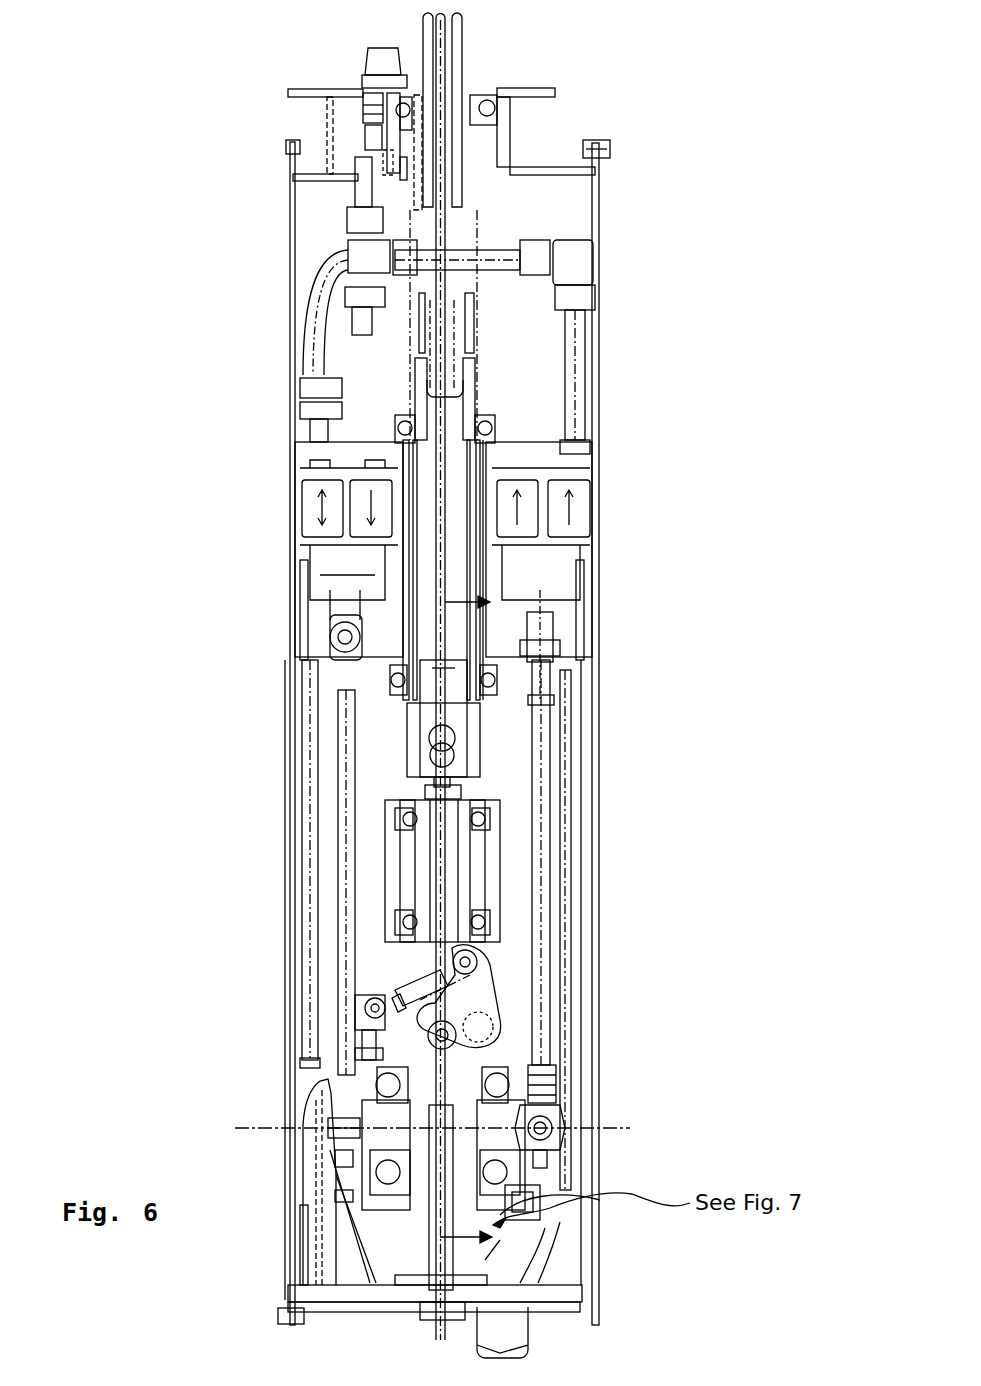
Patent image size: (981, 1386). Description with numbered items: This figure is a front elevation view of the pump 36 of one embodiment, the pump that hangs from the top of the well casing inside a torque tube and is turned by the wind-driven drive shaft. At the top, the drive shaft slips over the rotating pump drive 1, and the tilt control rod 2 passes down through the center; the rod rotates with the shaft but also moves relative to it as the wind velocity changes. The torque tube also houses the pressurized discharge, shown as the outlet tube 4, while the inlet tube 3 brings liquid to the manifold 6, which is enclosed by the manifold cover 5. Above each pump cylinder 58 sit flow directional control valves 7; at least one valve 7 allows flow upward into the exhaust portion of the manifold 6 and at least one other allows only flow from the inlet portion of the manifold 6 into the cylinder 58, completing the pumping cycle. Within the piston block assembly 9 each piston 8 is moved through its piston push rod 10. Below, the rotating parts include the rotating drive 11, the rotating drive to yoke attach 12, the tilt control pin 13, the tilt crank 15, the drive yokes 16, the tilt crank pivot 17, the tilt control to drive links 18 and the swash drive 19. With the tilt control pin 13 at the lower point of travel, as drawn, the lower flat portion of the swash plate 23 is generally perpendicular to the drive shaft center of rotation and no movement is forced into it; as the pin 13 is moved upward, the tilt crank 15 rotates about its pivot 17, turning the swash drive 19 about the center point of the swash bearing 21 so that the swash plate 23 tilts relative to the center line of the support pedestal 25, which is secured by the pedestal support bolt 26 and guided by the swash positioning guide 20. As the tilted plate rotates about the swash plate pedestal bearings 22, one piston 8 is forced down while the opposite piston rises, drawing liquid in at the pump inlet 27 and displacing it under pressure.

The rotating pump drive 1 is at (465, 28).
The tilt control rod 2 is at (450, 407).
The inlet tube 3 is at (570, 388).
The outlet tube 4 is at (313, 330).
The manifold cover 5 is at (520, 425).
The manifold 6 is at (600, 440).
The flow directional control valve 7 is at (592, 497).
The piston 8 is at (582, 590).
The piston block assembly 9 is at (597, 608).
The piston push rod 10 is at (550, 698).
The rotating drive 11 is at (482, 765).
The rotating drive to yoke attach 12 is at (502, 840).
The tilt control pin 13 is at (433, 750).
The tilt crank 15 is at (495, 952).
The drive yoke 16 is at (498, 982).
The tilt crank pivot 17 is at (500, 1010).
The tilt control to drive link 18 is at (393, 980).
The swash drive 19 is at (520, 1063).
The swash positioning guide 20 is at (310, 1105).
The swash bearing 21 is at (473, 1113).
The swash plate pedestal bearing 22 is at (537, 1168).
The swash plate 23 is at (517, 1207).
The support pedestal 25 is at (487, 1283).
The pedestal support bolt 26 is at (545, 1265).
The pump inlet 27 is at (530, 1348).
The pump 36 is at (622, 110).
The pump cylinder 58 is at (570, 554).